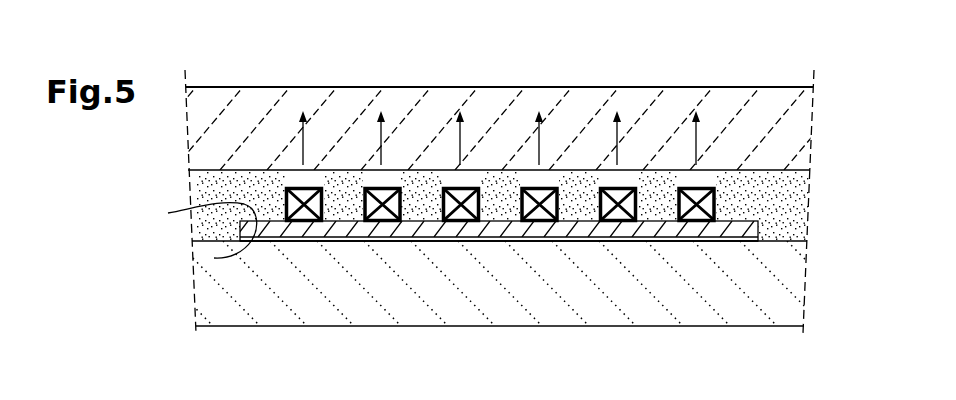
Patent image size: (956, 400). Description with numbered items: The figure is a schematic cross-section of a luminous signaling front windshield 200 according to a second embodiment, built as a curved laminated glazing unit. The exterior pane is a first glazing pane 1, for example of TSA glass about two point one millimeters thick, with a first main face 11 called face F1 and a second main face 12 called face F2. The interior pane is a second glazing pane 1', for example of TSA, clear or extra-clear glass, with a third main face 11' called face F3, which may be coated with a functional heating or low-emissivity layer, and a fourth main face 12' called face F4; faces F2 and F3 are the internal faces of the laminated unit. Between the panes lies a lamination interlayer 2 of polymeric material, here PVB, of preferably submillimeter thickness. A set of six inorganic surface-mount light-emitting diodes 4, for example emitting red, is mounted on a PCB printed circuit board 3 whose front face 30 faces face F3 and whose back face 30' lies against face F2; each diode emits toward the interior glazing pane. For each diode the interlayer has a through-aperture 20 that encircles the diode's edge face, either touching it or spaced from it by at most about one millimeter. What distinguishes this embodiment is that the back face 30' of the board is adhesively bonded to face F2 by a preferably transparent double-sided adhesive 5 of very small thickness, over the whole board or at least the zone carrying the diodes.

The front windshield 200 is at (211, 67).
The first glazing pane 1 is at (500, 283).
The second glazing pane 1' is at (490, 128).
The lamination interlayer 2 is at (193, 192).
The PCB printed circuit board 3 is at (236, 240).
The inorganic light-emitting diodes 4 is at (318, 188).
The double-sided adhesive 5 is at (445, 241).
The through-aperture 20 is at (297, 187).
The front face 30 is at (197, 227).
The back face 30' is at (447, 268).
The first main face 11 is at (786, 270).
The second main face 12 is at (500, 345).
The third main face 11' is at (782, 109).
The fourth main face 12' is at (499, 54).